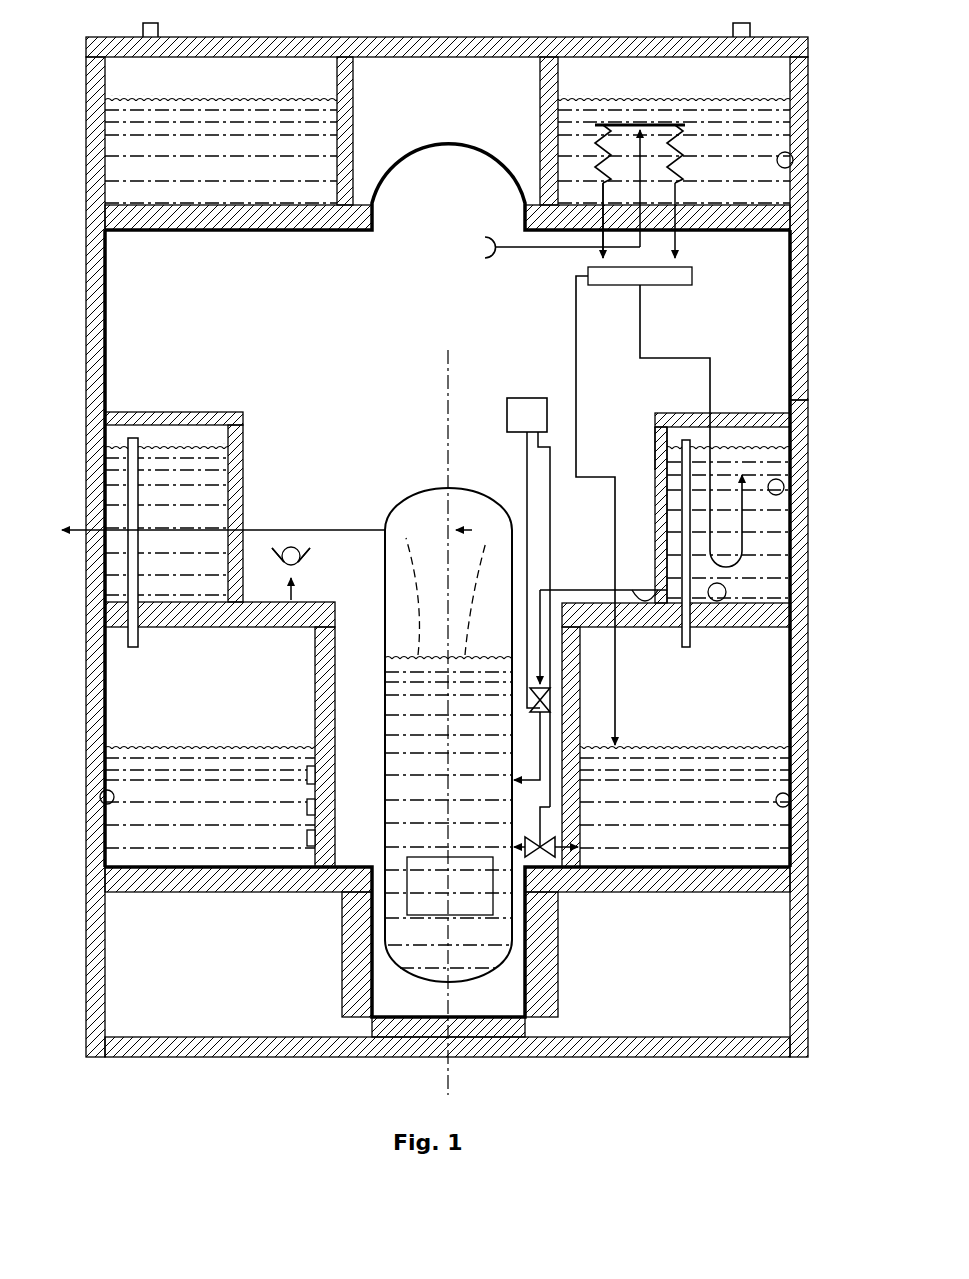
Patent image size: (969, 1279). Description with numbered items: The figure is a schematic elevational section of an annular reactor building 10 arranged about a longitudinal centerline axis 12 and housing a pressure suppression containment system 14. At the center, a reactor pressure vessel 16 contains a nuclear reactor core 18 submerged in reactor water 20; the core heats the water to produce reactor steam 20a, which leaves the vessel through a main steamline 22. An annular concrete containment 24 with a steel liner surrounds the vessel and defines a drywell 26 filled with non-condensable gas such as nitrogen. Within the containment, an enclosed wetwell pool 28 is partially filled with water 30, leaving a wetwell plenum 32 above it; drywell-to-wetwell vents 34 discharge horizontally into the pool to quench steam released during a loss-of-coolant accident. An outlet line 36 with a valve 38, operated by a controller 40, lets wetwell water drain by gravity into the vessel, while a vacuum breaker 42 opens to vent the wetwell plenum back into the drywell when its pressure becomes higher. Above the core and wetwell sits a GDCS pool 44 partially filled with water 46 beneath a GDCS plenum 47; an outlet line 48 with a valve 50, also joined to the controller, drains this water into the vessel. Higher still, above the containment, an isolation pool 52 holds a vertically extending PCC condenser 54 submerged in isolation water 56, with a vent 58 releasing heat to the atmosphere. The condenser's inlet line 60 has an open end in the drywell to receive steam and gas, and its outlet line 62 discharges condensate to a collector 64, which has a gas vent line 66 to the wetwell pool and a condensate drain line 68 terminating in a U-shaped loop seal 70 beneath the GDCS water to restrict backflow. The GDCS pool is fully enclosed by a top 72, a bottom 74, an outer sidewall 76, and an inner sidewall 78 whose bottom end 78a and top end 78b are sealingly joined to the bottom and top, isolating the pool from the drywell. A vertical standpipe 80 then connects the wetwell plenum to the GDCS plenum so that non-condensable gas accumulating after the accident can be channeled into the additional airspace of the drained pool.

The reactor building 10 is at (810, 312).
The longitudinal centerline axis 12 is at (446, 410).
The pressure suppression containment system 14 is at (810, 469).
The reactor pressure vessel 16 is at (399, 513).
The nuclear reactor core 18 is at (443, 897).
The reactor water 20 is at (430, 723).
The reactor steam 20a is at (492, 536).
The main steamline 22 is at (308, 530).
The containment 24 is at (86, 370).
The drywell 26 is at (383, 351).
The wetwell pool 28 is at (100, 798).
The wetwell pool water 30 is at (216, 816).
The wetwell plenum 32 is at (218, 694).
The drywell-to-wetwell vents 34 is at (308, 768).
The outlet line 36 is at (548, 858).
The valve 38 is at (548, 890).
The controller 40 is at (541, 429).
The vacuum breaker 42 is at (307, 573).
The GDCS pool 44 is at (243, 437).
The GDCS pool water 46 is at (773, 597).
The GDCS plenum 47 is at (770, 441).
The outlet line 48 is at (583, 590).
The valve 50 is at (531, 710).
The isolation pool 52 is at (794, 162).
The PCC condenser 54 is at (678, 158).
The isolation water 56 is at (745, 189).
The vent 58 is at (751, 34).
The inlet line 60 is at (506, 250).
The outlet line 62 is at (681, 239).
The collector 64 is at (680, 287).
The gas vent line 66 is at (578, 378).
The condensate drain line 68 is at (711, 385).
The loop seal 70 is at (746, 541).
The pool top 72 is at (768, 412).
The pool bottom 74 is at (718, 601).
The outer sidewall 76 is at (808, 575).
The inner sidewall 78 is at (658, 500).
The bottom end 78a is at (641, 604).
The top end 78b is at (655, 431).
The standpipe 80 is at (139, 496).